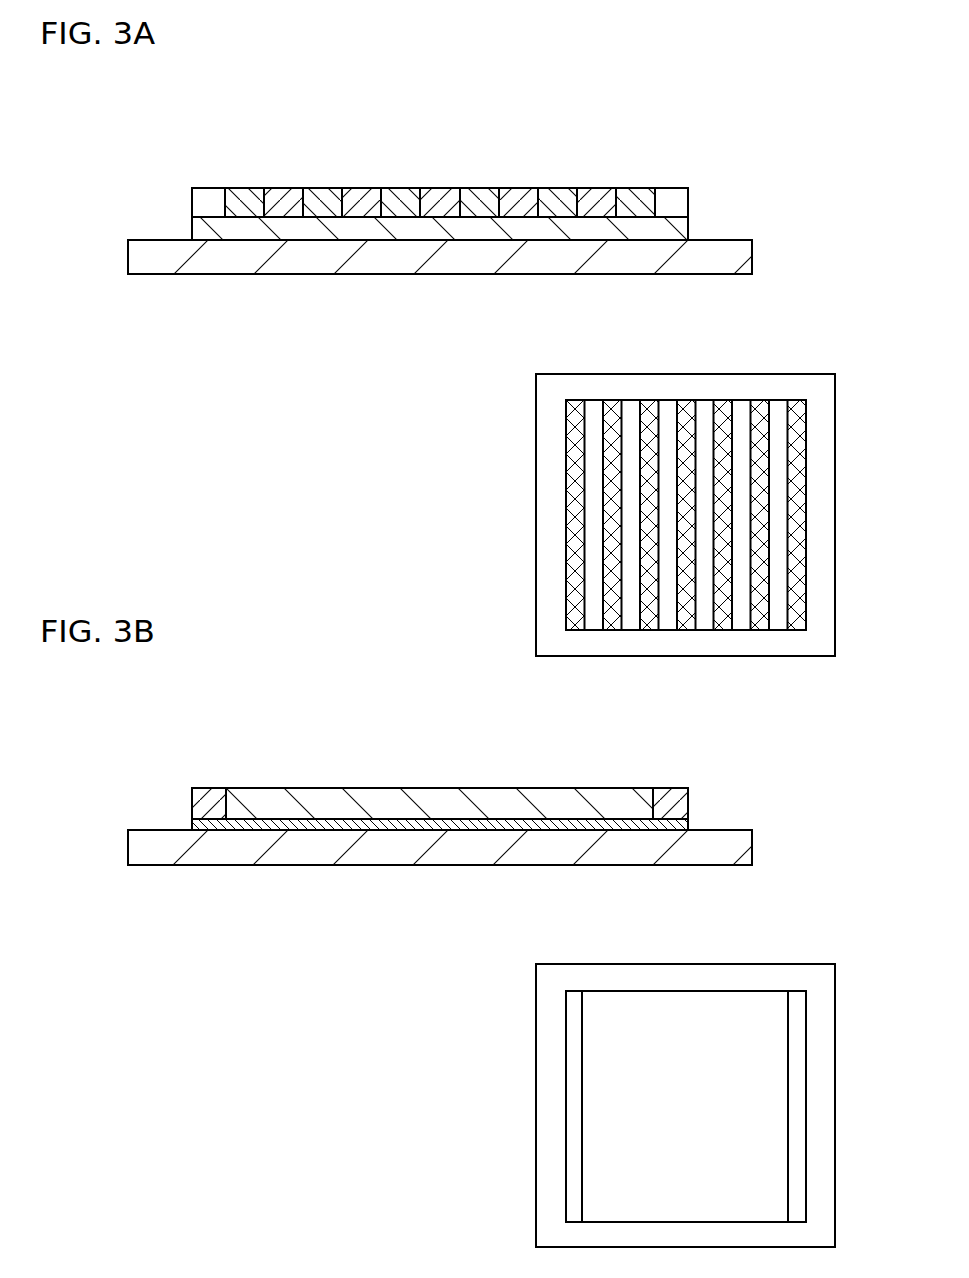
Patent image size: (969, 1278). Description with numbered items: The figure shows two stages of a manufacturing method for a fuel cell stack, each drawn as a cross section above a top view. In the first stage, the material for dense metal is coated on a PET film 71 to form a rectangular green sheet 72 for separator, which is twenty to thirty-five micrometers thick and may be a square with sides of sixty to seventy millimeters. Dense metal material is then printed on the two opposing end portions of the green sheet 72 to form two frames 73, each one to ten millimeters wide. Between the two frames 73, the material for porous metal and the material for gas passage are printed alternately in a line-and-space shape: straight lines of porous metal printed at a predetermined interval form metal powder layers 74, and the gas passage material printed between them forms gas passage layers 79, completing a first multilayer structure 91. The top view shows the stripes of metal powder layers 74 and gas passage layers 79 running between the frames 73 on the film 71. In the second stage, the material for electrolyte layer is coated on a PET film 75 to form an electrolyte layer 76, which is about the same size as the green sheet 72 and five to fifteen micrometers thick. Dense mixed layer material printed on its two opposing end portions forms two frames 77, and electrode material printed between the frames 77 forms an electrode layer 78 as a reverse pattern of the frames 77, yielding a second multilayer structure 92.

In FIG. 3A, the first multilayer structure 91 is at (236, 131).
In FIG. 3B, the second multilayer structure 92 is at (253, 724).
In FIG. 3A, the PET film 71 is at (745, 262).
In FIG. 3A, the green sheet for separator 72 is at (203, 230).
In FIG. 3A, the frame 73 is at (673, 207).
In FIG. 3A, the metal powder layer 74 is at (515, 195).
In FIG. 3A, the gas passage layer 79 is at (472, 195).
In FIG. 3B, the PET film 75 is at (748, 845).
In FIG. 3B, the electrolyte layer 76 is at (690, 822).
In FIG. 3B, the frame 77 is at (690, 790).
In FIG. 3B, the electrode layer 78 is at (617, 800).